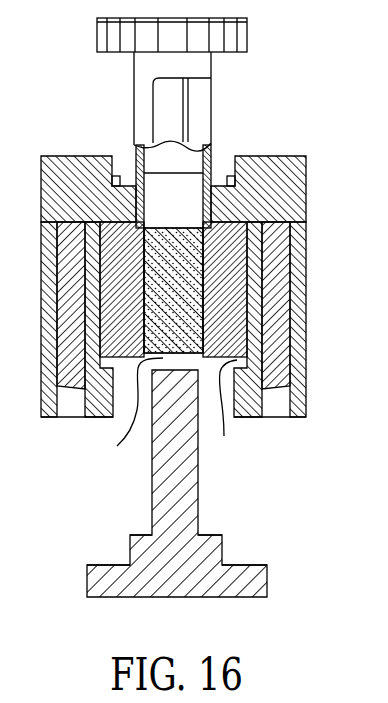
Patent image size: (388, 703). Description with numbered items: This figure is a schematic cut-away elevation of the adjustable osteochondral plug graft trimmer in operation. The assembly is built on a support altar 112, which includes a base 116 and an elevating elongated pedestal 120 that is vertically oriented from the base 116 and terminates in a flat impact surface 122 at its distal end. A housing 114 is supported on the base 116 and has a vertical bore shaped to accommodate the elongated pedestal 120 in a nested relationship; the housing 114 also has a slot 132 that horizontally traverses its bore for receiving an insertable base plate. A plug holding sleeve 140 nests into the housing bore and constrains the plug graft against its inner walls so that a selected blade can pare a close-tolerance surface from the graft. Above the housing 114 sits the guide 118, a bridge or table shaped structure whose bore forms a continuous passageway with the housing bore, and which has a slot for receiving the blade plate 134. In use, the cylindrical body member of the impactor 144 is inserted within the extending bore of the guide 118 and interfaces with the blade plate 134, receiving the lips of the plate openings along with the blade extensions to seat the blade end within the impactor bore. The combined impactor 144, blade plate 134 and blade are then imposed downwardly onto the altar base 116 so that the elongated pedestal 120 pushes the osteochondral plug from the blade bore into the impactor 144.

The support altar 112 is at (87, 578).
The housing 114 is at (307, 328).
The base 116 is at (222, 545).
The guide 118 is at (282, 155).
The elevating elongated pedestal 120 is at (198, 503).
The flat impact surface 122 is at (117, 446).
The slot 132 is at (224, 436).
The blade plate 134 is at (116, 180).
The plug holding sleeve 140 is at (262, 253).
The impactor 144 is at (134, 96).